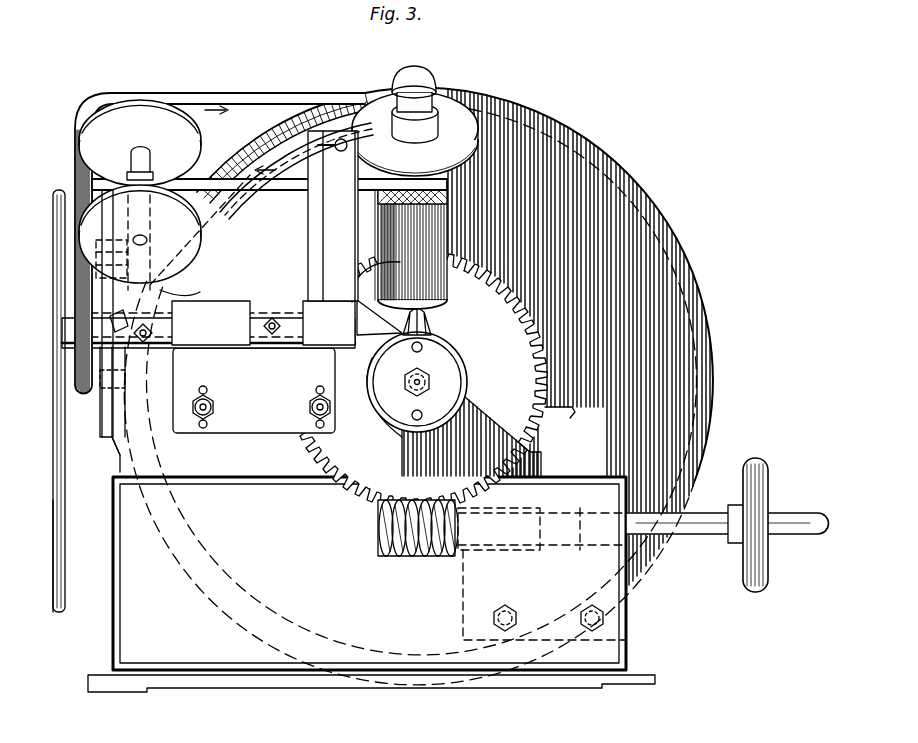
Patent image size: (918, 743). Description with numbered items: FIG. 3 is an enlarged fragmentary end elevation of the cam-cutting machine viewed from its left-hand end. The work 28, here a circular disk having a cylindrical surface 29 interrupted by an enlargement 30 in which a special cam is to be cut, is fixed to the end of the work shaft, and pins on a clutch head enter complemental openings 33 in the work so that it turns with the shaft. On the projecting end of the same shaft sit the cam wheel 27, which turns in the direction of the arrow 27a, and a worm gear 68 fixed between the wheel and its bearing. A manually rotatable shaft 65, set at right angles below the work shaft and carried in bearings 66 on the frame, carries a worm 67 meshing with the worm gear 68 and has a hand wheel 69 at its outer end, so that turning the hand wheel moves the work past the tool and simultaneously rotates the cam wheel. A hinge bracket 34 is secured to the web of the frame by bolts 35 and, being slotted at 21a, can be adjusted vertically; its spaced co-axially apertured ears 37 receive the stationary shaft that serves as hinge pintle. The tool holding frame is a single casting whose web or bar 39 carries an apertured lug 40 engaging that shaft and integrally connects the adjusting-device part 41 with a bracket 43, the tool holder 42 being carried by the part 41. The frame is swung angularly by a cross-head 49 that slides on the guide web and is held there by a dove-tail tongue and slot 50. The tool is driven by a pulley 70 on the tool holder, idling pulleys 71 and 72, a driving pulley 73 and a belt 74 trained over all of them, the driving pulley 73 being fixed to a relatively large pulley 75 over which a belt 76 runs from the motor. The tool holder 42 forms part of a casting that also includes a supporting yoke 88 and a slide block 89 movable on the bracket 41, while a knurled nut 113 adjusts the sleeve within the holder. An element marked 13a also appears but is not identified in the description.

The pin 13a is at (130, 340).
The slot 21a is at (330, 436).
The cam wheel 27 is at (588, 160).
The arrow 27a is at (640, 228).
The work 28 is at (455, 375).
The cylindrical surface 29 is at (452, 358).
The enlargement 30 is at (365, 340).
The openings 33 is at (428, 345).
The hinge bracket 34 is at (417, 380).
The bolts 35 is at (210, 398).
The ears 37 is at (228, 338).
The web or bar 39 is at (268, 165).
The apertured lug 40 is at (218, 303).
The part of adjusting device 41 is at (310, 170).
The tool holder 42 is at (447, 232).
The bracket 43 is at (160, 290).
The cross-head 49 is at (118, 458).
The dove-tail tongue and slot 50 is at (125, 420).
The rotatable shaft 65 is at (708, 534).
The bearings 66 is at (550, 520).
The worm 67 is at (392, 560).
The worm gear 68 is at (488, 434).
The hand wheel 69 is at (768, 490).
The pulley 70 is at (450, 118).
The idling pulley 71 is at (198, 238).
The idling pulley 72 is at (140, 143).
The driving pulley 73 is at (80, 396).
The belt 74 is at (297, 93).
The pulley 75 is at (101, 425).
The belt 76 is at (64, 512).
The supporting yoke 88 is at (370, 232).
The slide block 89 is at (345, 213).
The knurled nut 113 is at (420, 288).